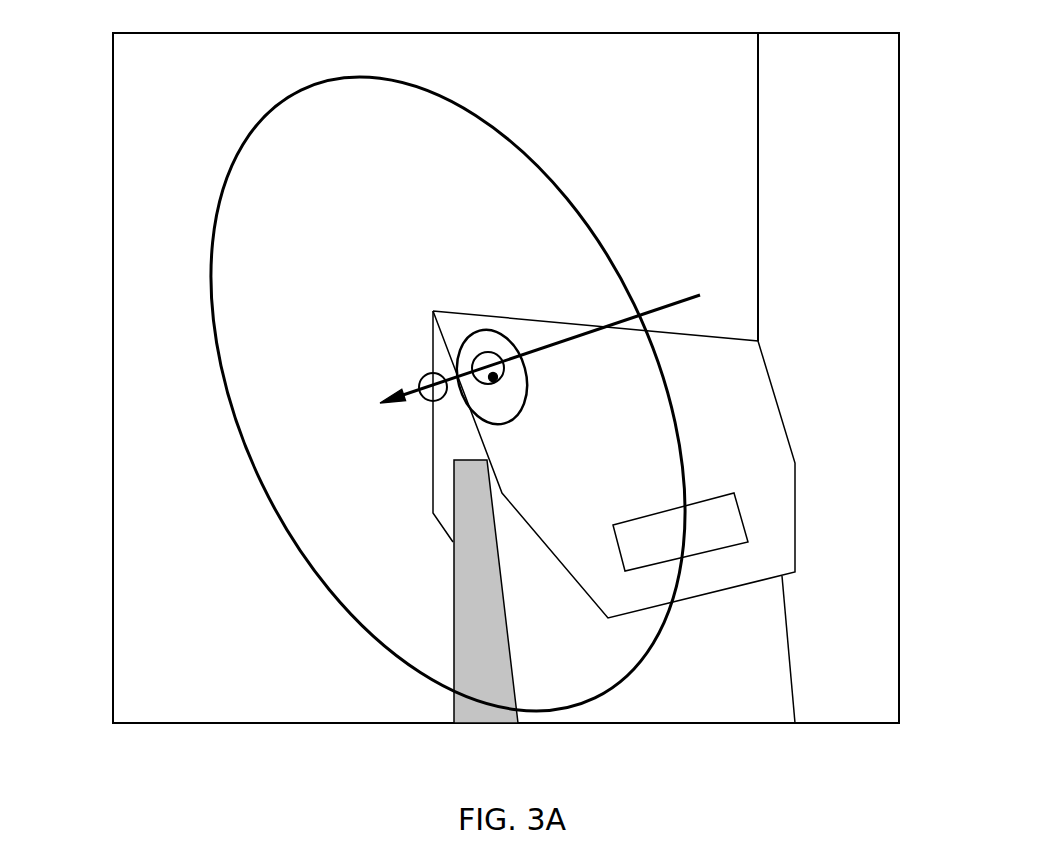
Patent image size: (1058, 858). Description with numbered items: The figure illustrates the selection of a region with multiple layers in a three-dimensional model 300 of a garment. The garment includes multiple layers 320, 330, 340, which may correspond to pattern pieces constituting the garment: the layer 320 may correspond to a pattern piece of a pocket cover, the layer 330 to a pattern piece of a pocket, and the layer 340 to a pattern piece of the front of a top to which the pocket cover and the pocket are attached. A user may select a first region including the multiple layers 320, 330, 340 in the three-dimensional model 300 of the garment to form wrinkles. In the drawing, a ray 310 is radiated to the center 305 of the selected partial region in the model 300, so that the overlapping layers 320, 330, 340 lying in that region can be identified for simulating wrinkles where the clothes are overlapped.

The 3D model of the garment 300 is at (758, 174).
The center of the selected partial region 305 is at (493, 377).
The ray 310 is at (675, 307).
The layer 320 is at (773, 523).
The layer 330 is at (440, 472).
The layer 340 is at (350, 438).